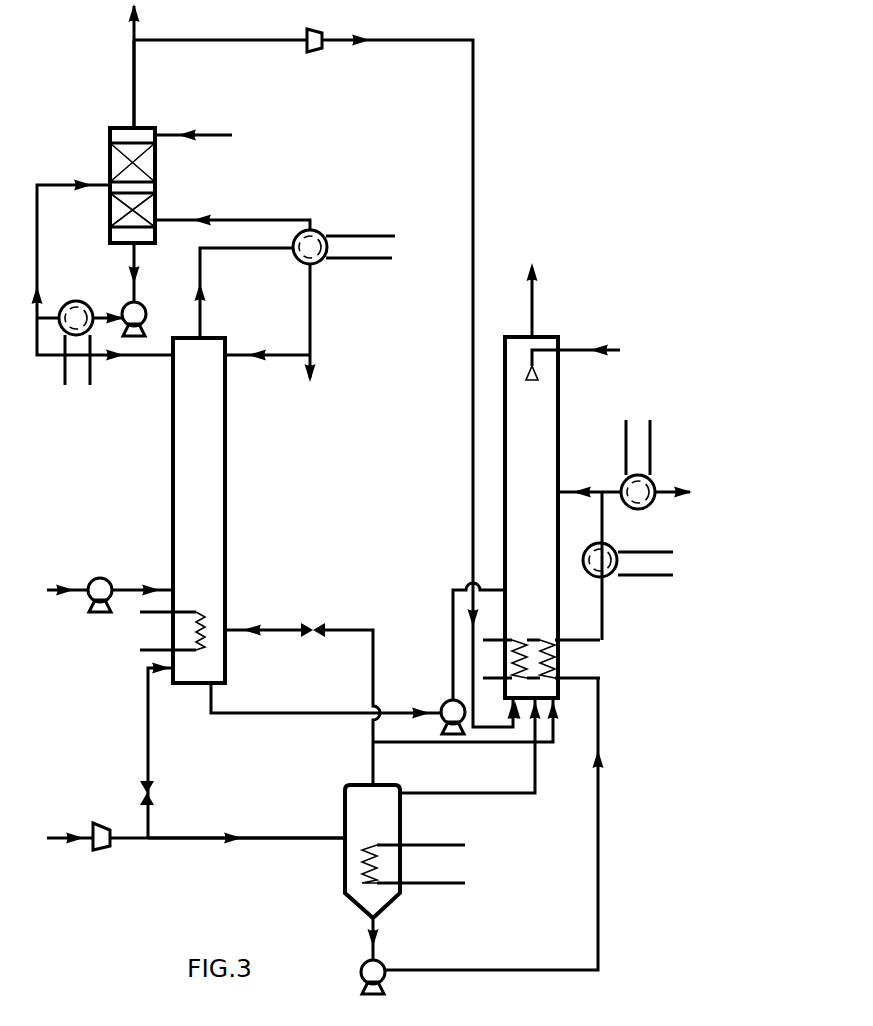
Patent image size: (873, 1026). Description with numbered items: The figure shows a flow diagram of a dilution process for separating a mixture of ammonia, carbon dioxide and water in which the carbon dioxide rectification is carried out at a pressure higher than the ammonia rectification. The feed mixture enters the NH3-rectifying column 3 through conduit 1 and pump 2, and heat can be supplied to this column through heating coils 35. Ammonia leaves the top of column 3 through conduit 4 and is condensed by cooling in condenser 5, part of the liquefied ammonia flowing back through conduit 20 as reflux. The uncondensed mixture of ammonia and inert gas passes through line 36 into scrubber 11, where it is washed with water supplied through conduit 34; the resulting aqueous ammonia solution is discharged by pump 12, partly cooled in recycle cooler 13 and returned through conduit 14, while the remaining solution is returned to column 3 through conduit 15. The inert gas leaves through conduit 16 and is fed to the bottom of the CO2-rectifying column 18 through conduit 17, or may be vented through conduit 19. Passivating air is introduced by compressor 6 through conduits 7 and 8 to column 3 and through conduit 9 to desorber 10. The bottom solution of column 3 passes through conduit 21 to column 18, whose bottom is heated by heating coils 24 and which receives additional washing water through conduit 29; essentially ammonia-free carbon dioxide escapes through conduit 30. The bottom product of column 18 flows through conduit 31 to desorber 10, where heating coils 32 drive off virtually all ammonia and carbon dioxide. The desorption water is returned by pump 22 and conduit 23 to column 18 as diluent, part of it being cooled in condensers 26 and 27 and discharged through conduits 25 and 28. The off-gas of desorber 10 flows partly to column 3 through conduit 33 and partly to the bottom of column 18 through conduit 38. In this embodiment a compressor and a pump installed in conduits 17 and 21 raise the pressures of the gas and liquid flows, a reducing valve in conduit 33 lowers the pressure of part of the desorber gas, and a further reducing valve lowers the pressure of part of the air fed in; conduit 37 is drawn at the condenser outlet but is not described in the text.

The conduit 1 is at (78, 583).
The pump 2 is at (92, 605).
The NH3-rectifying column 3 is at (173, 484).
The conduit 4 is at (270, 249).
The condenser 5 is at (312, 231).
The compressor 6 is at (100, 823).
The conduit 7 is at (137, 839).
The conduit 8 is at (148, 718).
The conduit 9 is at (182, 839).
The desorber 10 is at (403, 818).
The scrubber 11 is at (110, 201).
The pump 12 is at (128, 305).
The recycle cooler 13 is at (76, 301).
The conduit 14 is at (37, 232).
The conduit 15 is at (73, 360).
The conduit 16 is at (132, 75).
The conduit 17 is at (250, 40).
The CO2-rectifying column 18 is at (558, 398).
The conduit 19 is at (134, 23).
The conduit 20 is at (243, 355).
The conduit 21 is at (240, 713).
The pump 22 is at (388, 962).
The conduit 23 is at (600, 702).
The heating coils 24 is at (482, 642).
The conduit 25 is at (605, 538).
The condenser 26 is at (605, 578).
The condenser 27 is at (628, 503).
The conduit 28 is at (652, 505).
The conduit 29 is at (565, 352).
The conduit 30 is at (532, 302).
The conduit 31 is at (440, 792).
The heating coils 32 is at (413, 864).
The conduit 33 is at (253, 630).
The conduit 34 is at (232, 135).
The heating coils 35 is at (150, 612).
The line 36 is at (232, 220).
The condensate outlet 37 is at (313, 365).
The conduit 38 is at (497, 742).